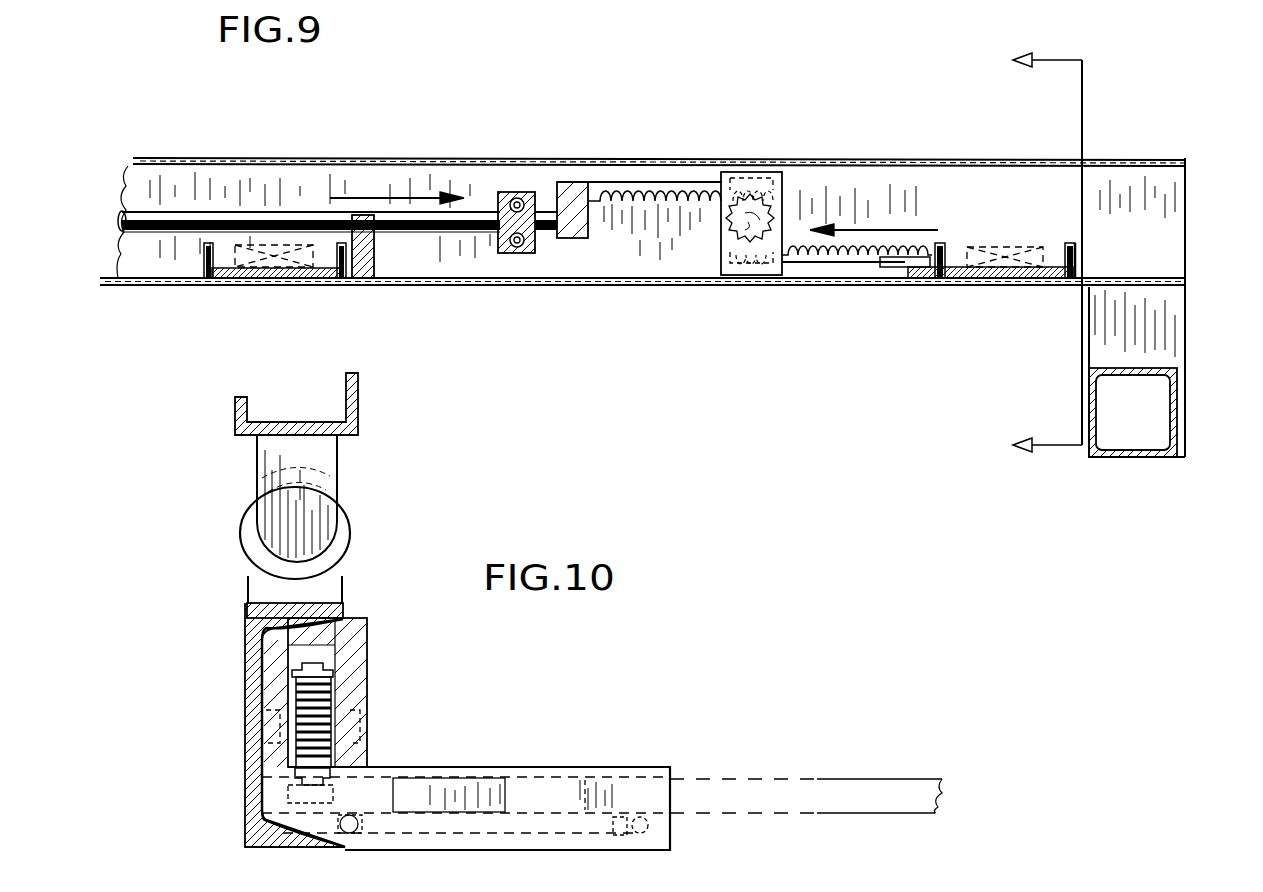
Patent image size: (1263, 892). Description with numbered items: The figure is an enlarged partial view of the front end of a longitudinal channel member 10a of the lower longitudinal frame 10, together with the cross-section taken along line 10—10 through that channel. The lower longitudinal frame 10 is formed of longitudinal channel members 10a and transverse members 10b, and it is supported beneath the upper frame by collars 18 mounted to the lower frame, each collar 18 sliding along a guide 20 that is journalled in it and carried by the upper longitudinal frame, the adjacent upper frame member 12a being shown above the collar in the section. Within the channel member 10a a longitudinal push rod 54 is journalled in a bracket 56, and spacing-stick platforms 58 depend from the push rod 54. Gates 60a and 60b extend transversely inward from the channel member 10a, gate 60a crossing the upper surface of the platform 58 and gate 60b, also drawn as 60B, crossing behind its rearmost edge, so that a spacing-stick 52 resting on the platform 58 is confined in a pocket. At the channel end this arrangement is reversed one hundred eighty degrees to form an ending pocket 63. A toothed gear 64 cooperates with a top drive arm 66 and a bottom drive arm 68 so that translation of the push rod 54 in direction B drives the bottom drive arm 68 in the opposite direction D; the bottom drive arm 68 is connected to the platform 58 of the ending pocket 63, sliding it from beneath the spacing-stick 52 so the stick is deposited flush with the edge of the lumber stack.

In FIG. 9, the lower longitudinal frame 10 is at (1030, 253).
In FIG. 9, the longitudinal channel member 10a is at (188, 170).
In FIG. 10, the longitudinal channel member 10a is at (258, 622).
In FIG. 9, the transverse member 10b is at (1138, 325).
In FIG. 10, the channel member 12a is at (358, 402).
In FIG. 10, the collar 18 is at (248, 535).
In FIG. 10, the guide 20 is at (283, 460).
In FIG. 9, the spacing-stick 52 is at (240, 285).
In FIG. 10, the spacing-stick 52 is at (818, 798).
In FIG. 9, the longitudinal push rod 54 is at (288, 217).
In FIG. 9, the bracket 56 is at (510, 190).
In FIG. 9, the spacing-stick platform 58 is at (1052, 258).
In FIG. 9, the gate 60a is at (203, 262).
In FIG. 9, the gate 60B is at (352, 257).
In FIG. 9, the gate 60b is at (1058, 280).
In FIG. 10, the gate 60b is at (602, 775).
In FIG. 9, the ending pocket 63 is at (1003, 292).
In FIG. 10, the ending pocket 63 is at (485, 743).
In FIG. 9, the toothed gear 64 is at (747, 190).
In FIG. 10, the toothed gear 64 is at (337, 695).
In FIG. 9, the top drive arm 66 is at (662, 190).
In FIG. 10, the top drive arm 66 is at (313, 653).
In FIG. 9, the bottom drive arm 68 is at (857, 258).
In FIG. 10, the bottom drive arm 68 is at (290, 800).